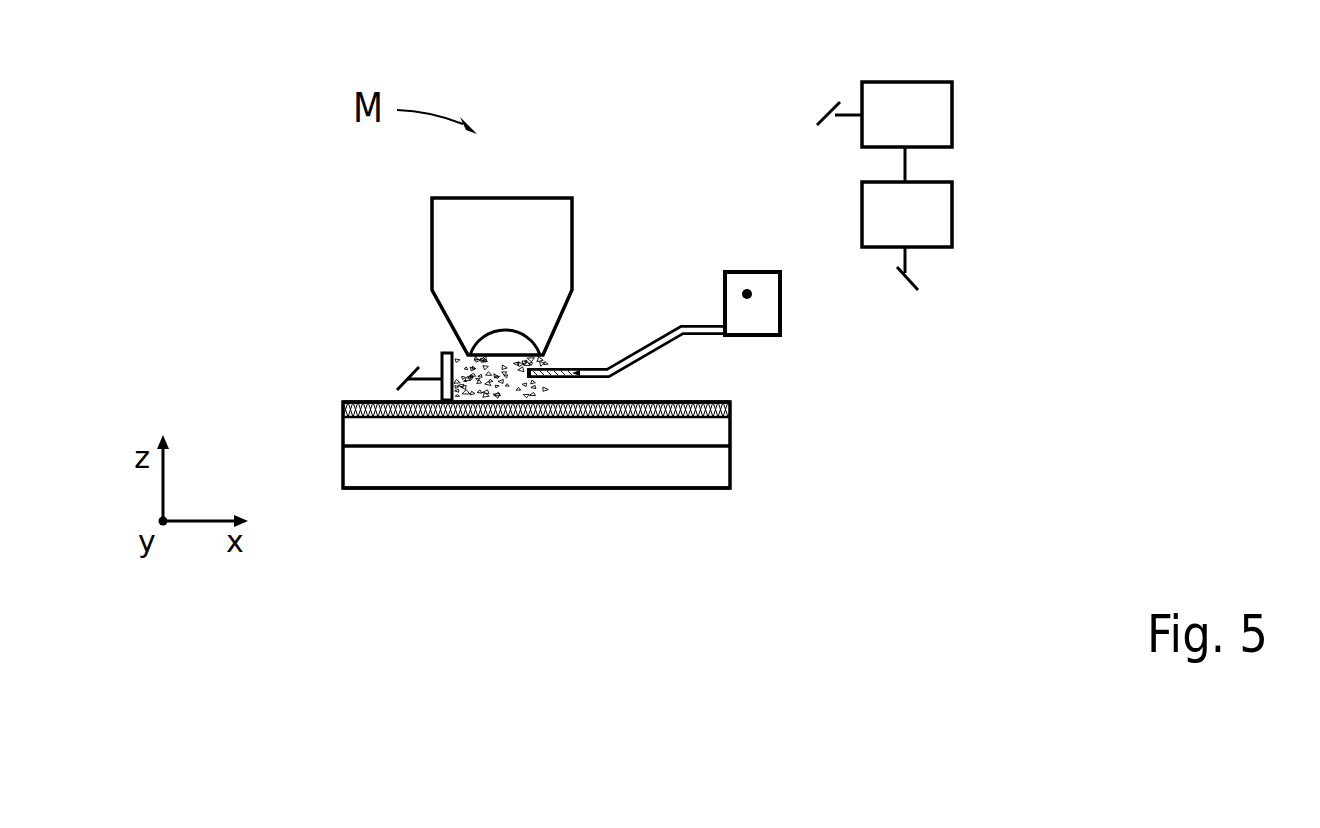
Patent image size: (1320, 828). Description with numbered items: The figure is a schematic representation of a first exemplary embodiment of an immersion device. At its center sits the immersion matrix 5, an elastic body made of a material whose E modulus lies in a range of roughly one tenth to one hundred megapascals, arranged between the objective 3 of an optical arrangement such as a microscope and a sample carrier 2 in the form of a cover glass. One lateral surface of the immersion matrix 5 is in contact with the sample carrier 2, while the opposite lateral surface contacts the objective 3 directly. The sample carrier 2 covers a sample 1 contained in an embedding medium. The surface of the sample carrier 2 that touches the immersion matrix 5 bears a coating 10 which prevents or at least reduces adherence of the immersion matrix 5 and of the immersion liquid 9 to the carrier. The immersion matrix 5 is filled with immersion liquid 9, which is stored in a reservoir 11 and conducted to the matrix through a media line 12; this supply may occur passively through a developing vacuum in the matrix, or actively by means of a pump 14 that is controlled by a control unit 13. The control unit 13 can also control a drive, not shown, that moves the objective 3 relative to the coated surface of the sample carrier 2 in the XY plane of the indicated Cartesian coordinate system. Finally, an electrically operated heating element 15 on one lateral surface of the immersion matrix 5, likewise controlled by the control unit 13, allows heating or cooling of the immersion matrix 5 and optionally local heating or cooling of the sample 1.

The sample 1 is at (343, 467).
The sample carrier 2 is at (343, 430).
The objective 3 is at (455, 220).
The immersion matrix 5 is at (608, 360).
The immersion liquid 9 is at (747, 294).
The coating 10 is at (343, 402).
The reservoir 11 is at (781, 298).
The media line 12 is at (682, 341).
The control unit 13 is at (928, 132).
The pump 14 is at (928, 232).
The heating element 15 is at (440, 361).